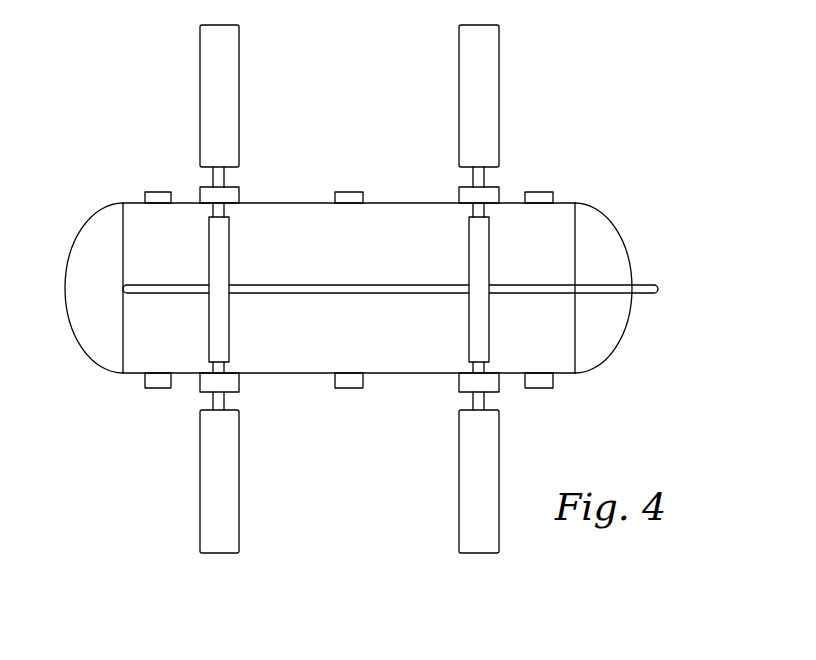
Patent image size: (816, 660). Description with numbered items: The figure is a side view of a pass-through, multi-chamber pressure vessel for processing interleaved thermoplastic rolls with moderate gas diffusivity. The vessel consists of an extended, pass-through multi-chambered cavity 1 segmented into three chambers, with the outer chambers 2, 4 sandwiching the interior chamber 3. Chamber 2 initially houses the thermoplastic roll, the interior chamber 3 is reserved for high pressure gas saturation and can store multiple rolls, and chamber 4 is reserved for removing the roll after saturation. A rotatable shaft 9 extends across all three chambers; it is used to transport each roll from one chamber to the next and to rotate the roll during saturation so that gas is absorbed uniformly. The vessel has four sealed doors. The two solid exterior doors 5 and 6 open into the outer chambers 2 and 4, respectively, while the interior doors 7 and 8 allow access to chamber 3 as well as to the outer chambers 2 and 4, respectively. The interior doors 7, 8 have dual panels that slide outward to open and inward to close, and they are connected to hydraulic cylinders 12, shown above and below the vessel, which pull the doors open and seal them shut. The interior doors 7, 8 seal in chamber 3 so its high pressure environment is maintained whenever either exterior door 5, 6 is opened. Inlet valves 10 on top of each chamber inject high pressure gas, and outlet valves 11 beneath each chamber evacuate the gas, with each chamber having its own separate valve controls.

The pass-through multi-chambered cavity 1 is at (617, 228).
The outer chamber 2 is at (557, 261).
The interior chamber 3 is at (357, 261).
The outer chamber 4 is at (168, 261).
The exterior door 5 is at (612, 350).
The exterior door 6 is at (70, 318).
The interior door 7 is at (469, 337).
The interior door 8 is at (229, 333).
The rotatable shaft 9 is at (660, 290).
The inlet valve 10 is at (158, 192).
The outlet valve 11 is at (156, 388).
The hydraulic cylinder 12 is at (234, 105).